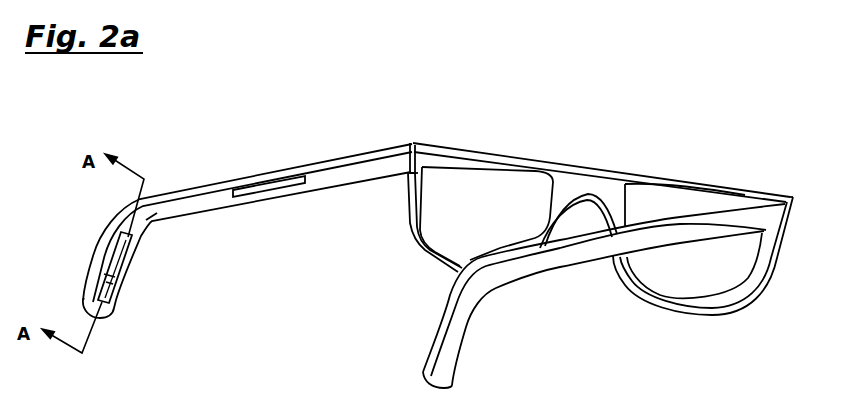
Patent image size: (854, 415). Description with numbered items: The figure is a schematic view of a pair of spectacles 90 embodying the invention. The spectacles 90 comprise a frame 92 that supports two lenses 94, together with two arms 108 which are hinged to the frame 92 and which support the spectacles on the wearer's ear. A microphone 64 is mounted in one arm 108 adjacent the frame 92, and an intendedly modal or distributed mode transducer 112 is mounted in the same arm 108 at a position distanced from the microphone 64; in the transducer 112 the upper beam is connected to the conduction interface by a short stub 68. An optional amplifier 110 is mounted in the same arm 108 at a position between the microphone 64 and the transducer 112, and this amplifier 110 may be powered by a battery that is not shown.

The microphone 64 is at (408, 144).
The short stub 68 is at (111, 273).
The pair of spectacles 90 is at (152, 217).
The frame 92 is at (600, 180).
The lenses 94 is at (457, 230).
The arms 108 is at (195, 197).
The amplifier 110 is at (277, 183).
The distributed mode transducer 112 is at (97, 295).